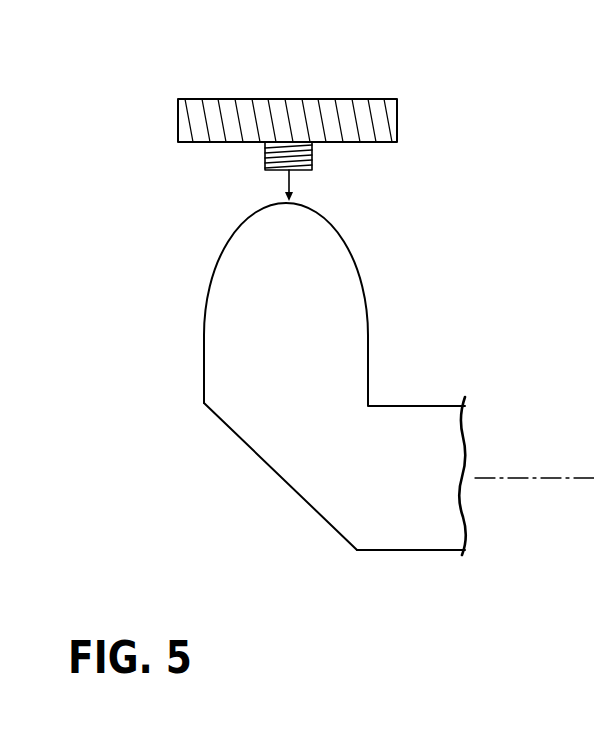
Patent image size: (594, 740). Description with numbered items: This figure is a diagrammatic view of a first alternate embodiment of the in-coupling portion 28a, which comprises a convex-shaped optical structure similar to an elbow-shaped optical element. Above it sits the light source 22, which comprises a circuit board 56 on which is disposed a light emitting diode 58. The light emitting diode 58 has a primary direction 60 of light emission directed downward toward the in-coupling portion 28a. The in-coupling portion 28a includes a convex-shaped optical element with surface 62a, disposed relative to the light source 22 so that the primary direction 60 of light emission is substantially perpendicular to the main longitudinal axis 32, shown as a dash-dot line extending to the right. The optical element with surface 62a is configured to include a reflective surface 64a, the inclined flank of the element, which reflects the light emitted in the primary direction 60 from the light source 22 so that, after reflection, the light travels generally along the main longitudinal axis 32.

The light source 22 is at (294, 331).
The in-coupling portion 28a is at (386, 320).
The main longitudinal axis 32 is at (563, 478).
The circuit board 56 is at (178, 115).
The light emitting diode 58 is at (265, 155).
The primary direction of light emission 60 is at (289, 182).
The surface of convex-shaped optical element 62a is at (226, 252).
The reflective surface 64a is at (272, 468).